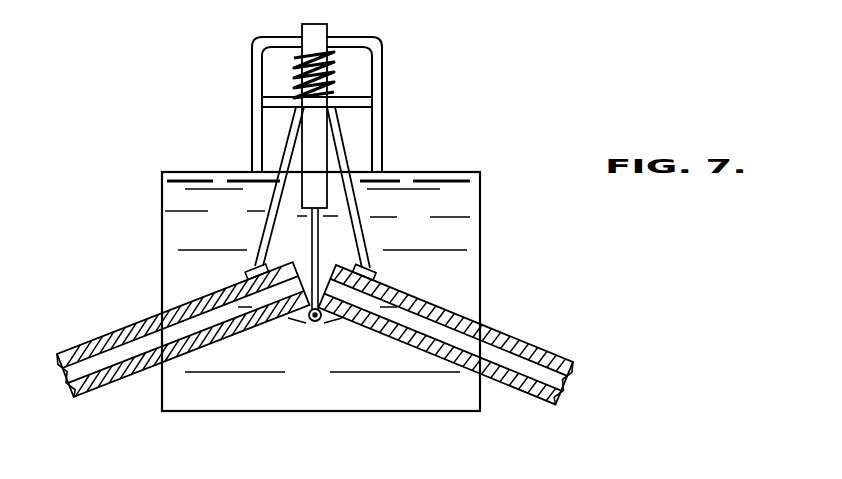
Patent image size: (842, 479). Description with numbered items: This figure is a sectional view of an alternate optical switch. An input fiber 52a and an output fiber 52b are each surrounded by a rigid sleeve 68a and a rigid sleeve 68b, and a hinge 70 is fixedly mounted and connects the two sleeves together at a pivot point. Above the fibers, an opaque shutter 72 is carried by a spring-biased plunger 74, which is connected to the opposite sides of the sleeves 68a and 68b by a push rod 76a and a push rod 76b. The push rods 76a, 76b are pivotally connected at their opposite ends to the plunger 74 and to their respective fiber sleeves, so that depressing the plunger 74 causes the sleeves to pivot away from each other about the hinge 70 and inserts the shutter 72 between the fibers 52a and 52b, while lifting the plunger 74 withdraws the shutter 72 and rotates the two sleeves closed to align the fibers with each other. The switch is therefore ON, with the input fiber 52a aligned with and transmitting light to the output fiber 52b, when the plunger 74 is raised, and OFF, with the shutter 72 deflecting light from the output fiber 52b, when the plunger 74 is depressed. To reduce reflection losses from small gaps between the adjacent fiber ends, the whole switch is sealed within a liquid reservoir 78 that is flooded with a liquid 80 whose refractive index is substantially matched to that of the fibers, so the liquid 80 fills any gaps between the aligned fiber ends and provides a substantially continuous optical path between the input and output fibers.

The input fiber 52a is at (197, 361).
The output fiber 52b is at (438, 353).
The rigid sleeve 68a is at (121, 380).
The rigid sleeve 68b is at (520, 388).
The hinge 70 is at (314, 325).
The opaque shutter 72 is at (318, 243).
The spring-biased plunger 74 is at (320, 197).
The push rod 76a is at (277, 205).
The push rod 76b is at (360, 206).
The liquid reservoir 78 is at (482, 233).
The liquid 80 is at (188, 210).